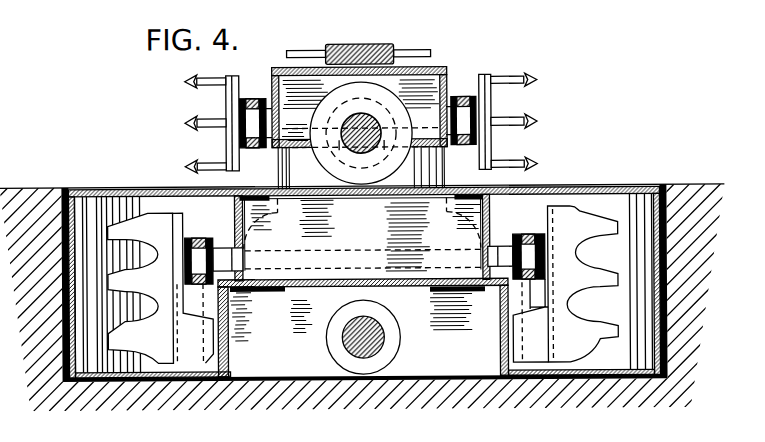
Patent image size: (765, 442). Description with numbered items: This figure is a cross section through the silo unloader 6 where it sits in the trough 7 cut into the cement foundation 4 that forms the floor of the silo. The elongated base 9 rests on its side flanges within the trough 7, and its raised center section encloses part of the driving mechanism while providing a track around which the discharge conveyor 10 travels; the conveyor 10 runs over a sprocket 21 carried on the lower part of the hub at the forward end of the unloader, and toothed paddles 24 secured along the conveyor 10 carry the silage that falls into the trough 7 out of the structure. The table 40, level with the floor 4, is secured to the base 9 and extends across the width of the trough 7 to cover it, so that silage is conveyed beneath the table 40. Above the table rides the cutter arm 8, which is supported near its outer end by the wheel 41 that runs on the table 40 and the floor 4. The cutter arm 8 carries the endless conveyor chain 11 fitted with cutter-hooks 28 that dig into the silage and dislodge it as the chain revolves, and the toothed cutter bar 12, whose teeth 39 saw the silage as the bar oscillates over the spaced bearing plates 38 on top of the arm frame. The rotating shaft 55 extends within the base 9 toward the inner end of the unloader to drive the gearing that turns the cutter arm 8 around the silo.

The foundation 4 is at (38, 186).
The unloader apparatus 6 is at (457, 56).
The trough 7 is at (91, 210).
The cutter arm 8 is at (433, 67).
The base 9 is at (231, 341).
The discharge conveyor 10 is at (198, 236).
The endless conveyor chain 11 is at (464, 97).
The cutter bar 12 is at (361, 45).
The sprocket 21 is at (498, 243).
The teethed paddles 24 is at (133, 224).
The cutter-hooks 28 is at (192, 123).
The bearing plates 38 is at (280, 67).
The teeth 39 is at (316, 52).
The table 40 is at (151, 188).
The wheel 41 is at (330, 165).
The rotating shaft 55 is at (383, 339).